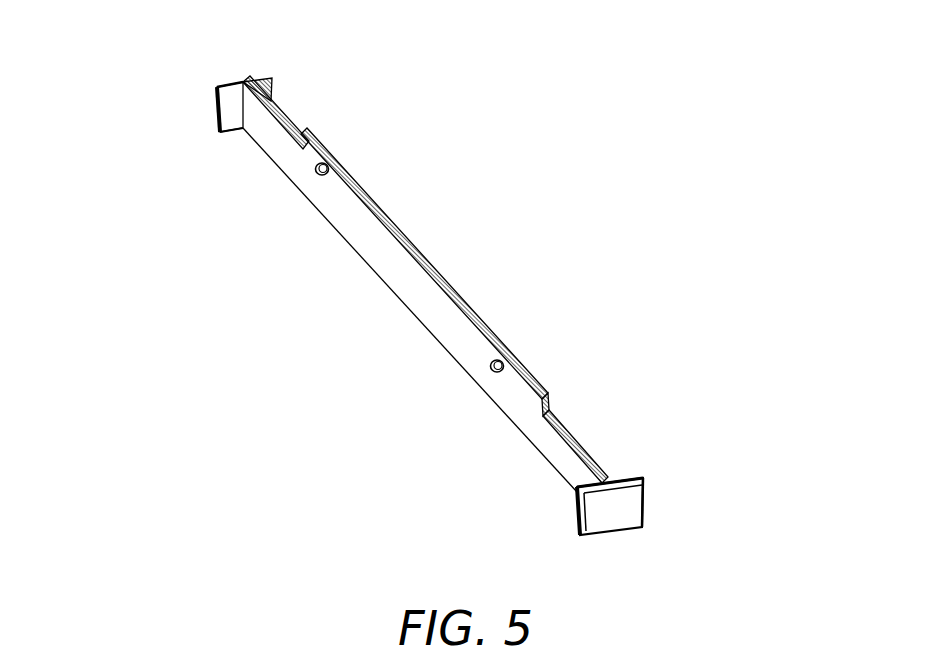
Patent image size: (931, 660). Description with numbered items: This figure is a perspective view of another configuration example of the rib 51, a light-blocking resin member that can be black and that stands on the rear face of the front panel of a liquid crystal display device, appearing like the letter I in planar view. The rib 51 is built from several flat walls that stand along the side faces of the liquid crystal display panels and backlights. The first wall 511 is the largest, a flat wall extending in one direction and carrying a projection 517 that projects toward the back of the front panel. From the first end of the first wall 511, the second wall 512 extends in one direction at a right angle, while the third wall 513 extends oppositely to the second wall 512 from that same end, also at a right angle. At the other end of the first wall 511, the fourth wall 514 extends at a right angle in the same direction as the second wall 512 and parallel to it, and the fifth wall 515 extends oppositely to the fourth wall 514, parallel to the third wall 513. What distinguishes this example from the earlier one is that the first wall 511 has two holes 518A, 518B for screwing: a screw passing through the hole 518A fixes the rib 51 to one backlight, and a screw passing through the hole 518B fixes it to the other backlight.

The rib 51 is at (479, 174).
The first wall 511 is at (367, 266).
The second wall 512 is at (262, 78).
The third wall 513 is at (216, 88).
The fourth wall 514 is at (643, 483).
The fifth wall 515 is at (577, 492).
The projection 517 is at (548, 393).
The hole 518A is at (491, 372).
The hole 518B is at (317, 175).